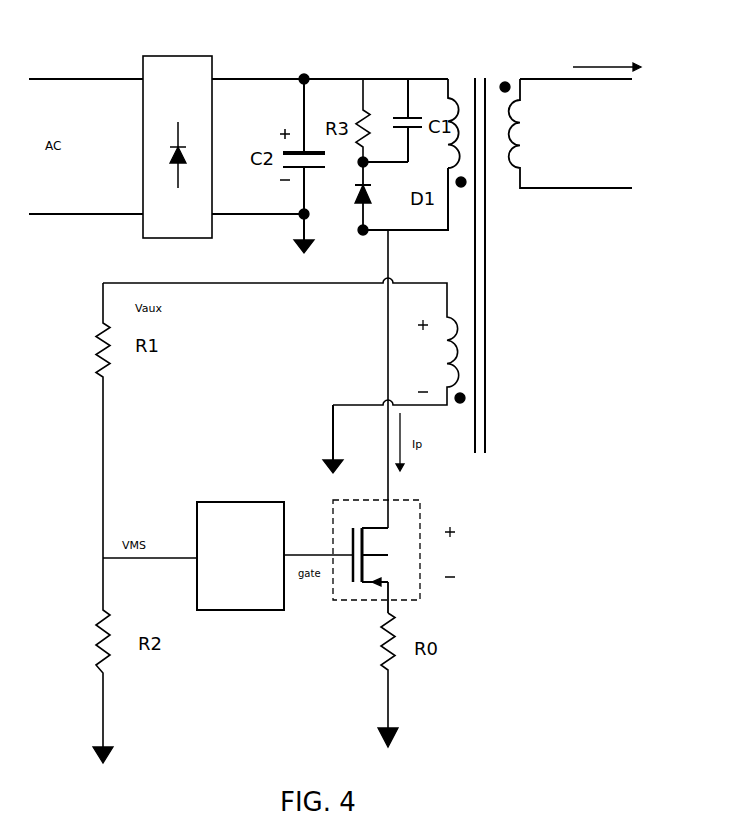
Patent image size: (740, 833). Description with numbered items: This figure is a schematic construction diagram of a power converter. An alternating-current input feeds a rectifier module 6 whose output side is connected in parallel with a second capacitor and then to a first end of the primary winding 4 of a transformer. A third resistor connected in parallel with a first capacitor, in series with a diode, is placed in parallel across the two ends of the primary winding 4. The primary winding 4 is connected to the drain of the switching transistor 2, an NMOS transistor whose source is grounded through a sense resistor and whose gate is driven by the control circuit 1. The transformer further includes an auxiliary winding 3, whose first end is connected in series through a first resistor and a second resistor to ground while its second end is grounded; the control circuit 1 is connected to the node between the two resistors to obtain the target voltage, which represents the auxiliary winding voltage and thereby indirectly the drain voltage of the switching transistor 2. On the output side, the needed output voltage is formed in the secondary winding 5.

The control circuit 1 is at (262, 612).
The switching transistor 2 is at (420, 520).
The auxiliary winding 3 is at (470, 352).
The primary winding 4 is at (460, 90).
The secondary winding 5 is at (506, 175).
The rectifier module 6 is at (165, 56).